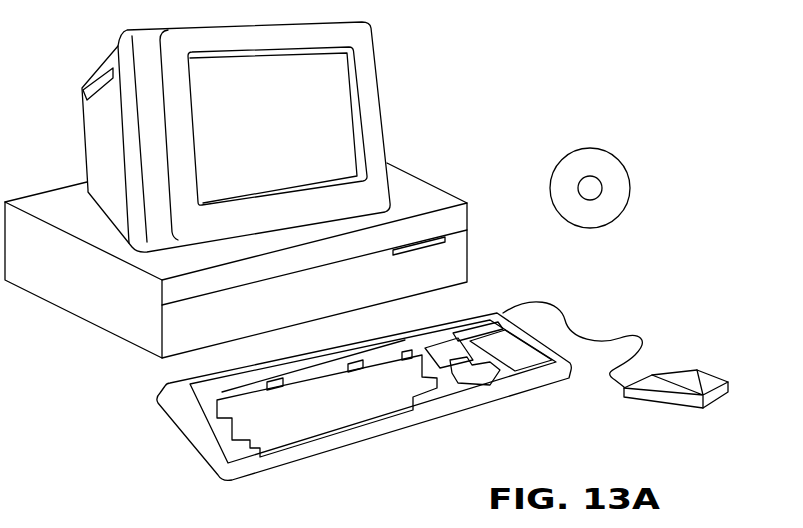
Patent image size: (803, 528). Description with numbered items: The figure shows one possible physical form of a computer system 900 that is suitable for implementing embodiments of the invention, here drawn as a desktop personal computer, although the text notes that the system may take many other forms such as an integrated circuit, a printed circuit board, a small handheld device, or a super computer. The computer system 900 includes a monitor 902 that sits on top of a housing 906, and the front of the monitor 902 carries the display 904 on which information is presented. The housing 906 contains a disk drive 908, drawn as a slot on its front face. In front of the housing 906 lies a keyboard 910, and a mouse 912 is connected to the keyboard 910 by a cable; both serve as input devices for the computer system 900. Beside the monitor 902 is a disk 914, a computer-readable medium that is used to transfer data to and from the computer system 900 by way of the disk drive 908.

The computer system 900 is at (500, 68).
The monitor 902 is at (383, 112).
The display 904 is at (343, 82).
The housing 906 is at (113, 337).
The disk drive 908 is at (445, 237).
The keyboard 910 is at (457, 415).
The mouse 912 is at (707, 380).
The disk 914 is at (608, 145).